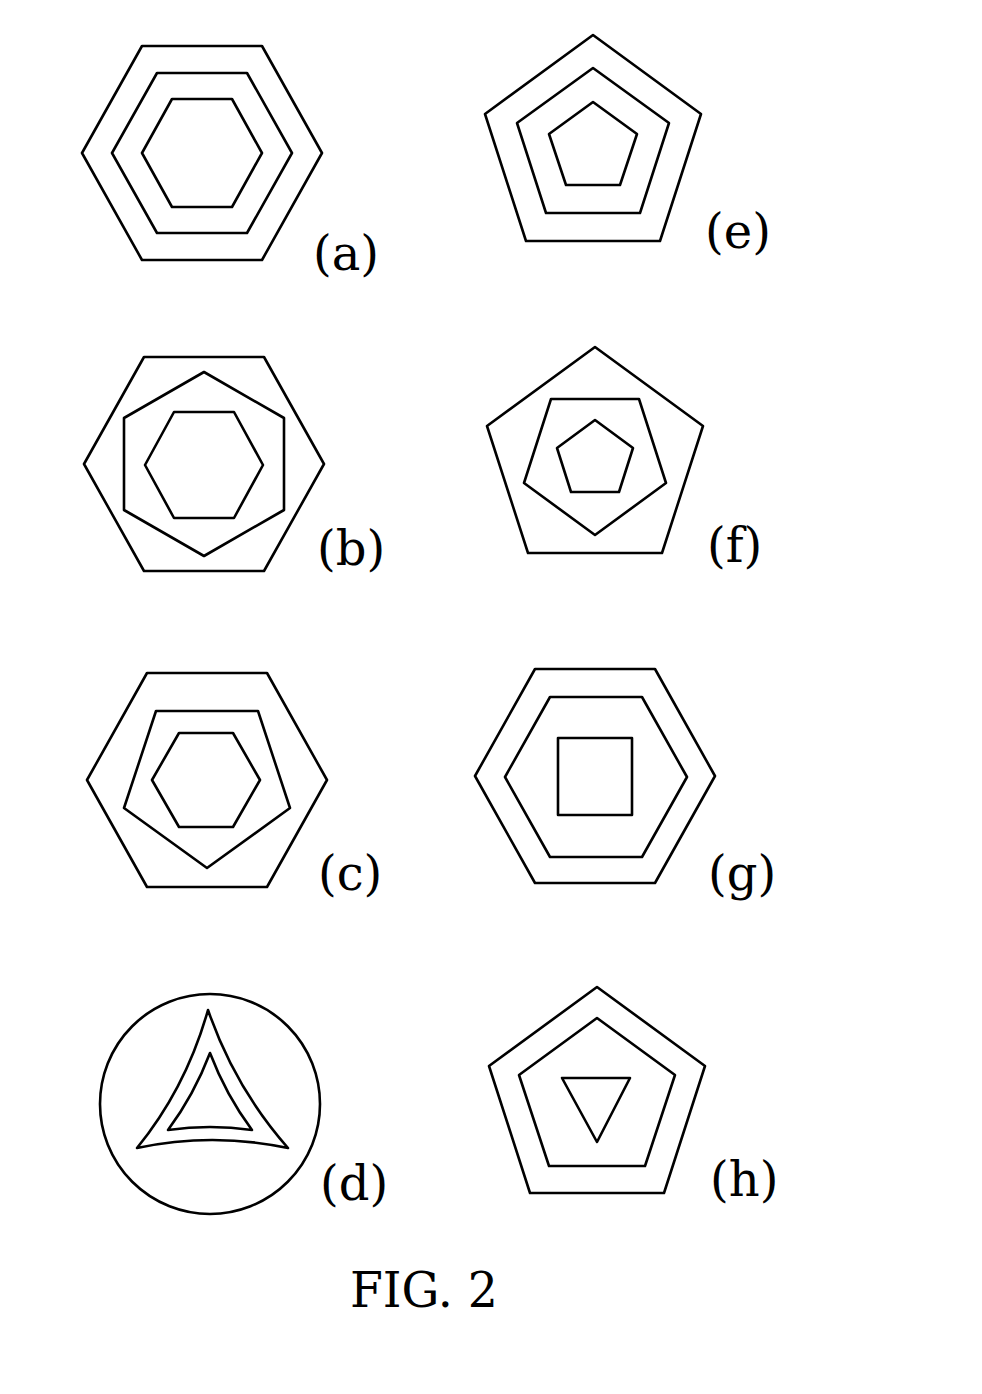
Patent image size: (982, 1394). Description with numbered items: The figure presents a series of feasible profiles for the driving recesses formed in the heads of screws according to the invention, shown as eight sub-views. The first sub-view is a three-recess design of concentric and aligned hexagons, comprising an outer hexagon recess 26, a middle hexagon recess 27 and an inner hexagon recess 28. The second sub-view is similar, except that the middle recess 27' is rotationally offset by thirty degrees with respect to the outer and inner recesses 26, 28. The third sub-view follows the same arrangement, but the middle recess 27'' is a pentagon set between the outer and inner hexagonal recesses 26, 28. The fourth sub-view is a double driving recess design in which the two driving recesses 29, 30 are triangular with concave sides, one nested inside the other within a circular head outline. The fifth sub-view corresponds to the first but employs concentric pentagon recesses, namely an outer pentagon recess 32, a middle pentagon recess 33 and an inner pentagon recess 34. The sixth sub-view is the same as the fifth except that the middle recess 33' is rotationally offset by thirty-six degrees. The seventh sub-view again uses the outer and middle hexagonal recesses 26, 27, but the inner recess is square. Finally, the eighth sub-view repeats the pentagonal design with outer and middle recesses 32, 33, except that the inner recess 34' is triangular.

The outer hexagon recess 26 is at (110, 194).
The middle hexagon recess 27 is at (389, 442).
The rotationally offset middle recess 27' is at (176, 464).
The pentagonal middle recess 27'' is at (191, 811).
The inner hexagon recess 28 is at (176, 112).
The outer triangular driving recess 29 is at (196, 1083).
The inner triangular driving recess 30 is at (207, 1126).
The outer pentagon recess 32 is at (627, 64).
The middle pentagon recess 33 is at (643, 617).
The rotationally offset middle pentagon recess 33' is at (642, 467).
The inner pentagon recess 34 is at (539, 299).
The triangular inner recess 34' is at (562, 1061).